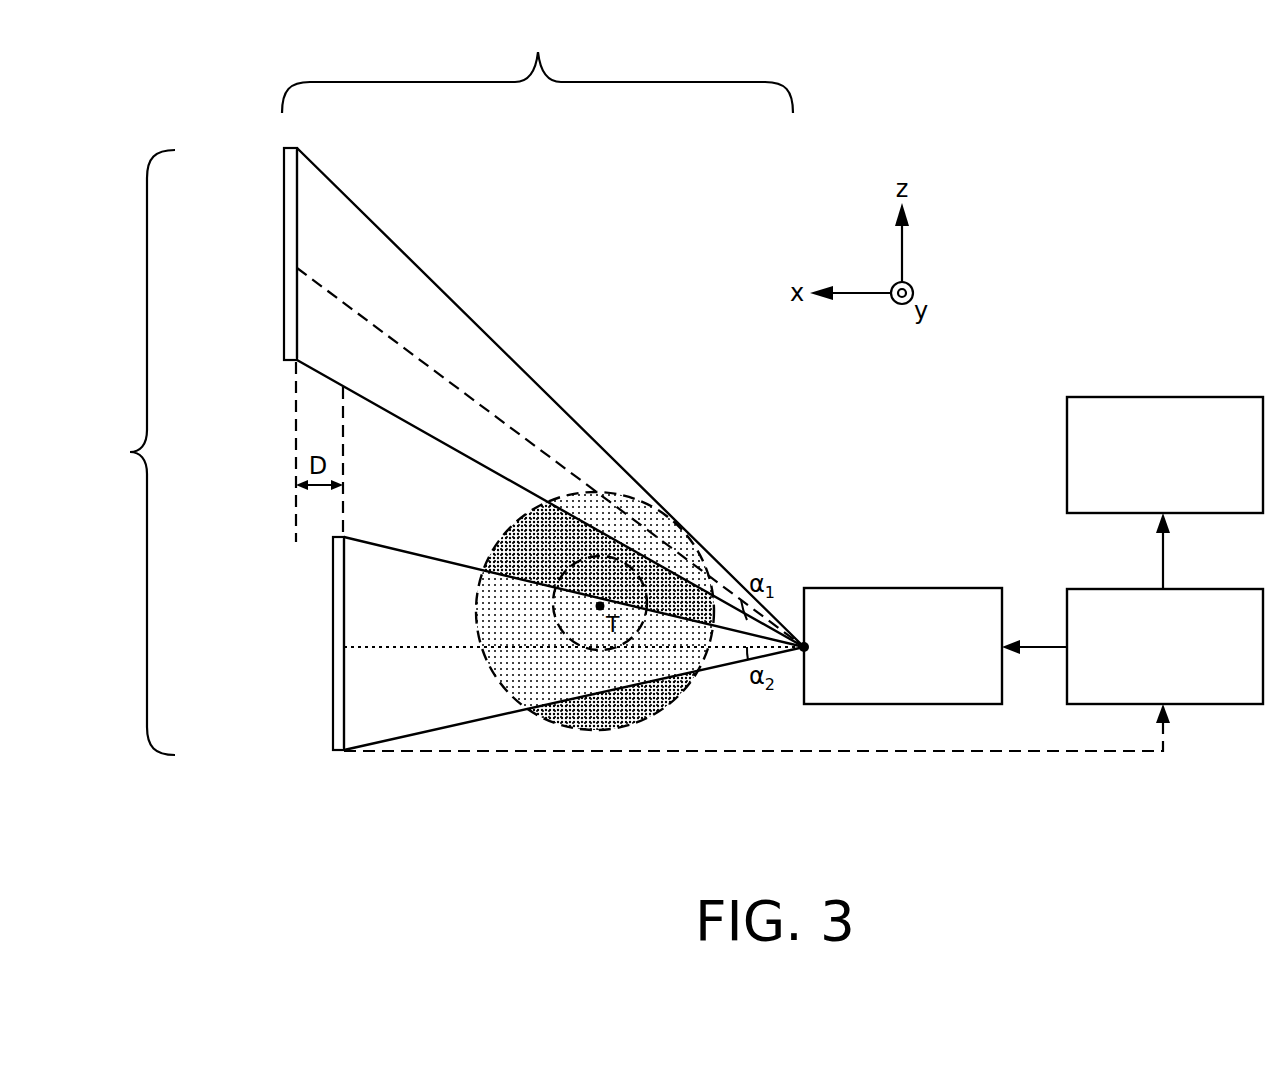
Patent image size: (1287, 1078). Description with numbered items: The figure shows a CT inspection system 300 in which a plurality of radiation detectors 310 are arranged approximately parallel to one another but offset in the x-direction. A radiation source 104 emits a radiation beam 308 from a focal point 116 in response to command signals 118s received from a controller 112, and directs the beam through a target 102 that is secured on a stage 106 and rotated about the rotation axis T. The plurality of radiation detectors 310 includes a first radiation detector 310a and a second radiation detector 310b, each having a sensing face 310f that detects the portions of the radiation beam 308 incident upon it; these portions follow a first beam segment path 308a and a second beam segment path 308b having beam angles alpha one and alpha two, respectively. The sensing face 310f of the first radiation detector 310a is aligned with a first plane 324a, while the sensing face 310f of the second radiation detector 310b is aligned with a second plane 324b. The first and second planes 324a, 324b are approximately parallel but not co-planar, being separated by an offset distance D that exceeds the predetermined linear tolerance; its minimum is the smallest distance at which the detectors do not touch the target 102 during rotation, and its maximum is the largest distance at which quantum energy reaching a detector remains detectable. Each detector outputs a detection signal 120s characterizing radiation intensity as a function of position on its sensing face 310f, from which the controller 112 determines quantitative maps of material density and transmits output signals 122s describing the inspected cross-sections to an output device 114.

The CT inspection system 300 is at (1097, 216).
The radiation beam 308 is at (537, 66).
The first beam segment path 308a is at (550, 397).
The second beam segment path 308b is at (574, 643).
The plurality of radiation detectors 310 is at (122, 452).
The first radiation detector 310a is at (297, 268).
The second radiation detector 310b is at (333, 648).
The sensing face 310f is at (300, 195).
The first plane 324a is at (296, 507).
The second plane 324b is at (343, 407).
The target 102 is at (690, 668).
The stage 106 is at (560, 578).
The radiation source 104 is at (903, 646).
The controller 112 is at (1165, 646).
The output device 114 is at (1165, 455).
The focal point 116 is at (806, 646).
The command signals 118s is at (1036, 647).
The detection signal 120s is at (832, 751).
The output signals 122s is at (1166, 562).